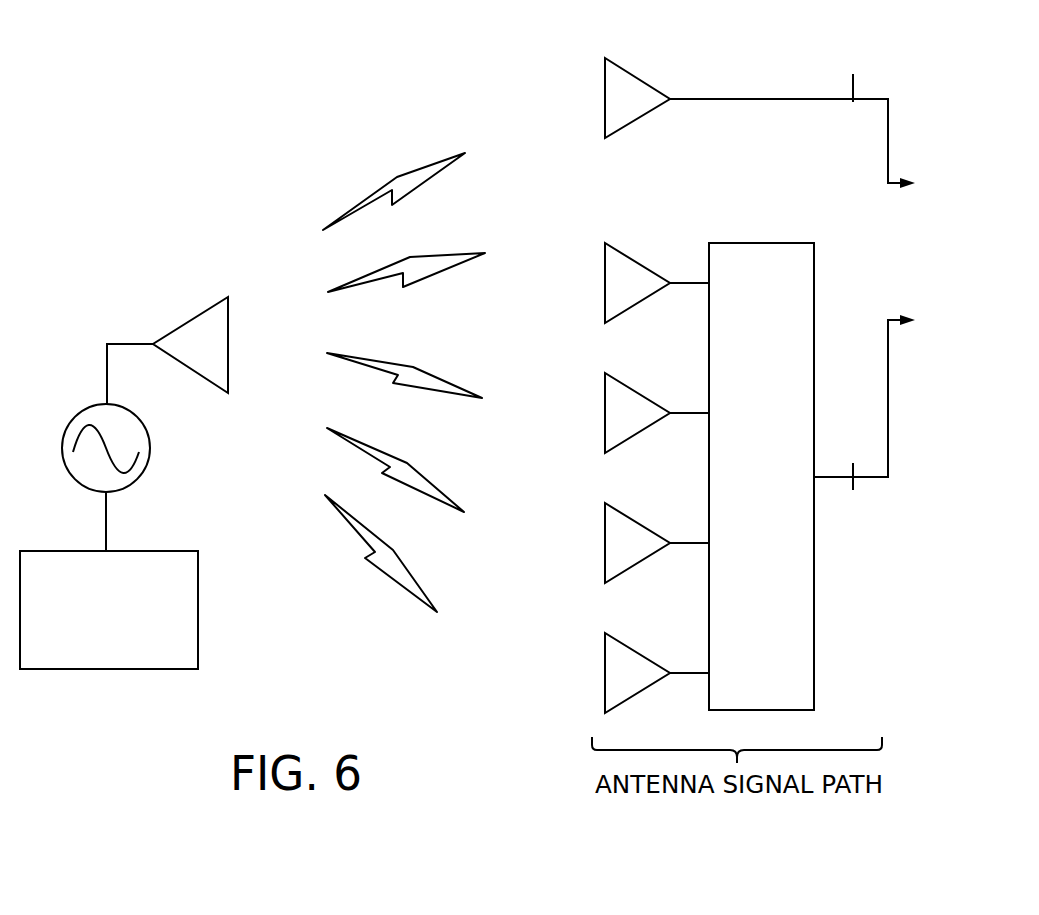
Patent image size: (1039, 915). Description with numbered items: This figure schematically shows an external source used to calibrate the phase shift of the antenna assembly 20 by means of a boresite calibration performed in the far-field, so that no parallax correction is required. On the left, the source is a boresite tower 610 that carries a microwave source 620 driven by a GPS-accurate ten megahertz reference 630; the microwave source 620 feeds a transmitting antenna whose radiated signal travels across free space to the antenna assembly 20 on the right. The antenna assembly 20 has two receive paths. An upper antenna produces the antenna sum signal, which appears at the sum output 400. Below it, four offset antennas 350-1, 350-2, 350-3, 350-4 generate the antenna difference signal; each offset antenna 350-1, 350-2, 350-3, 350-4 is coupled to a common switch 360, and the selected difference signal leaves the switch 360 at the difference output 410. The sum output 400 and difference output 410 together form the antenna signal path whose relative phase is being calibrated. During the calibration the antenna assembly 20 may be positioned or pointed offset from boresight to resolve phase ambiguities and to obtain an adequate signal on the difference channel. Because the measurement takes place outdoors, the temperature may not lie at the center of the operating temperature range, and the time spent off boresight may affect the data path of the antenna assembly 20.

The antenna assembly 20 is at (776, 52).
The sum output 400 is at (840, 100).
The offset antenna 350-1 is at (650, 268).
The offset antenna 350-2 is at (650, 399).
The offset antenna 350-3 is at (650, 529).
The offset antenna 350-4 is at (650, 658).
The switch 360 is at (783, 486).
The difference output 410 is at (838, 479).
The boresite tower 610 is at (116, 252).
The microwave source 620 is at (147, 462).
The gps accurate 10 MHz reference 630 is at (198, 616).